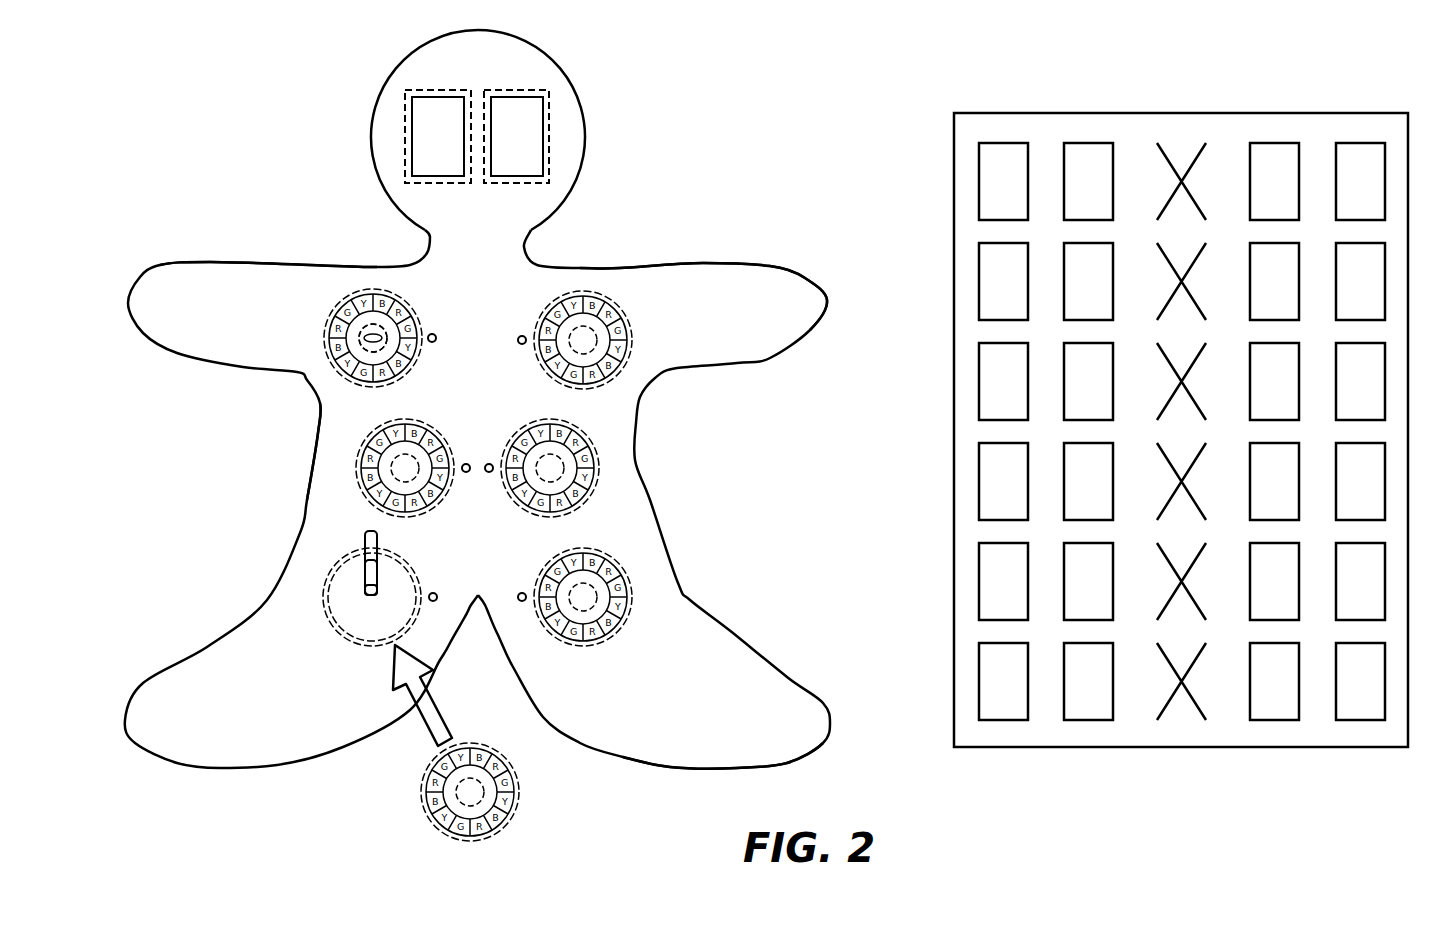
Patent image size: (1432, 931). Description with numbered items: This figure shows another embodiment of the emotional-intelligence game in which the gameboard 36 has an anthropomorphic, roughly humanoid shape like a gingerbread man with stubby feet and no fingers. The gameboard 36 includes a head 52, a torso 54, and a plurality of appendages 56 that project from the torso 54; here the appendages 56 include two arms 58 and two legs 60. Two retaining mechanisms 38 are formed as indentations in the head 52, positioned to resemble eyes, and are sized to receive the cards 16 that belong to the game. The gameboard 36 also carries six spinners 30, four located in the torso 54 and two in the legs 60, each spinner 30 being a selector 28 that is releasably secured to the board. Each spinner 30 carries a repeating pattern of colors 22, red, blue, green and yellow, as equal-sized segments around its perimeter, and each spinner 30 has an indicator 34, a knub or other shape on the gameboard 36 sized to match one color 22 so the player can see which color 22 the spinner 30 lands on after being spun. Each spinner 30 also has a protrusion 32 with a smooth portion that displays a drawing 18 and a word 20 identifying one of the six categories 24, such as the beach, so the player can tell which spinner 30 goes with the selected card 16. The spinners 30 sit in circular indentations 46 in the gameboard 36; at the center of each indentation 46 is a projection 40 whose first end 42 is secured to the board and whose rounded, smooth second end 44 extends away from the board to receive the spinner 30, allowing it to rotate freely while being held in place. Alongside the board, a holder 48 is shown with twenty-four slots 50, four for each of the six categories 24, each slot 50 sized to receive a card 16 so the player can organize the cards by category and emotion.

The card 16 is at (428, 120).
The drawing, picture, and/or photograph 18 is at (368, 340).
The word 20 is at (372, 333).
The color 22 is at (596, 452).
The category 24 is at (1178, 160).
The selector 28 is at (422, 790).
The spinner 30 is at (347, 640).
The protrusion 32 is at (373, 338).
The indicator 34 is at (437, 342).
The gameboard 36 is at (415, 50).
The retaining mechanism 38 is at (405, 125).
The projection 40 is at (365, 575).
The first end 42 is at (376, 598).
The second end 44 is at (366, 532).
The indentation 46 is at (340, 615).
The holder 48 is at (1100, 113).
The slot 50 is at (1272, 143).
The head 52 is at (566, 76).
The torso 54 is at (316, 452).
The appendage 56 is at (193, 262).
The arm 58 is at (778, 266).
The leg 60 is at (640, 763).